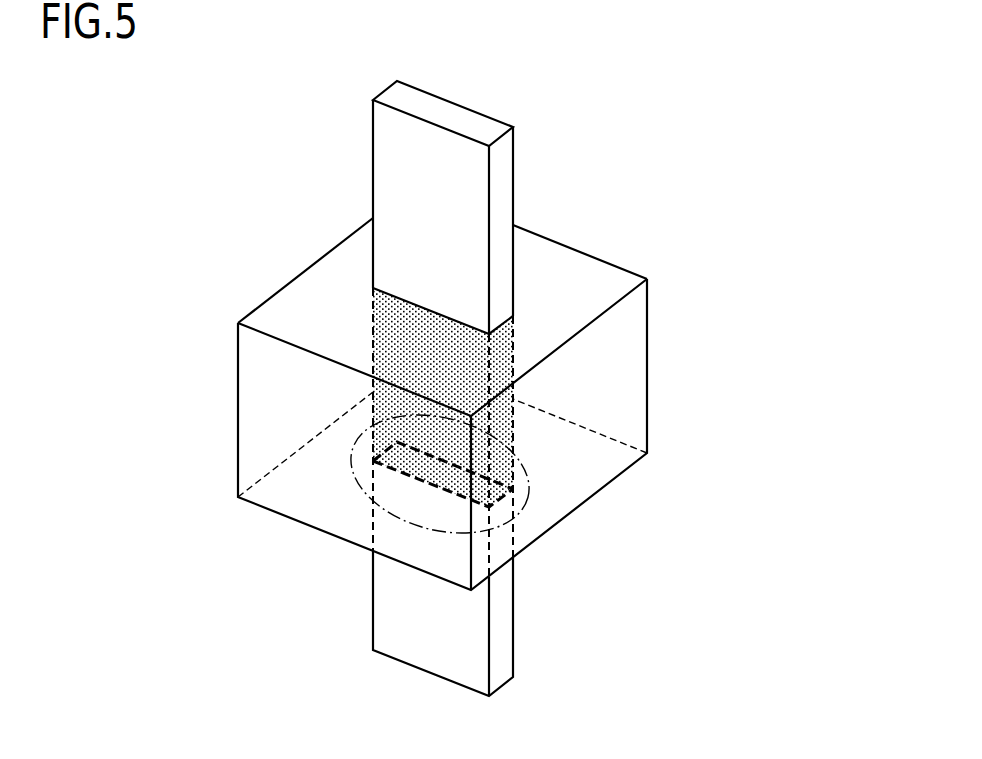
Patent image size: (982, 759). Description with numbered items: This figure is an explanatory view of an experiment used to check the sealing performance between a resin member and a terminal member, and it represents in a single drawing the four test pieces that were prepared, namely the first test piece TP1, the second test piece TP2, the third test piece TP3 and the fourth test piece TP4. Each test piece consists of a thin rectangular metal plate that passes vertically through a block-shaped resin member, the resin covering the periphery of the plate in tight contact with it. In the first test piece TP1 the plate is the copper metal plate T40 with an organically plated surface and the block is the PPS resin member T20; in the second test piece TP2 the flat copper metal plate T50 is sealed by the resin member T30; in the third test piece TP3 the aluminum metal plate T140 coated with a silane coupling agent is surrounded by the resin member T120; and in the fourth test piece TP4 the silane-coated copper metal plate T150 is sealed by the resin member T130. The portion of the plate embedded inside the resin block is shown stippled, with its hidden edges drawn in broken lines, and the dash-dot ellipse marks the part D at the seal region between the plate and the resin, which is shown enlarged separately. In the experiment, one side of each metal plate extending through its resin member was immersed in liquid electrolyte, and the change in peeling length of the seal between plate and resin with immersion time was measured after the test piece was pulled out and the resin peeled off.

The first test piece TP1 is at (415, 372).
The second test piece TP2 is at (415, 372).
The third test piece TP3 is at (415, 372).
The fourth test piece TP4 is at (415, 372).
The metal plate T40 is at (302, 388).
The metal plate T50 is at (302, 388).
The metal plate T140 is at (302, 388).
The metal plate T150 is at (302, 388).
The resin member T20 is at (369, 400).
The resin member T30 is at (369, 400).
The resin member T120 is at (369, 400).
The resin member T130 is at (282, 312).
The part D is at (528, 502).